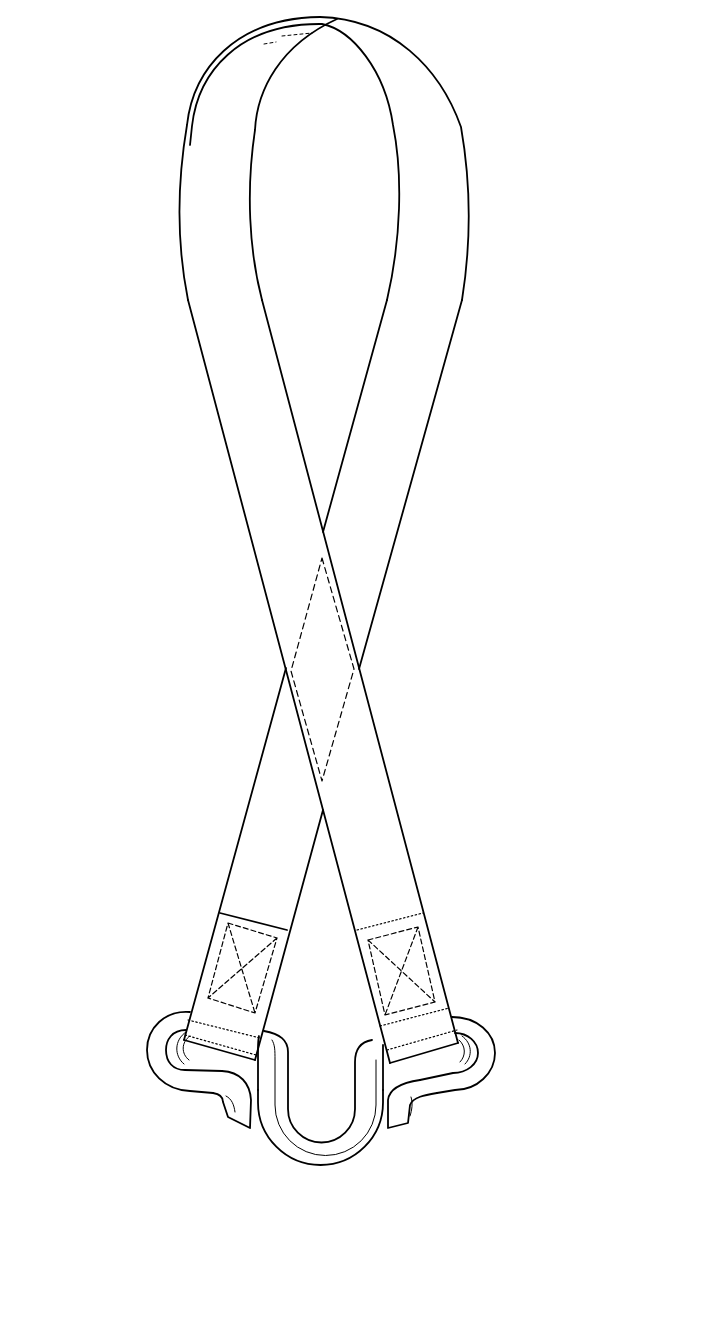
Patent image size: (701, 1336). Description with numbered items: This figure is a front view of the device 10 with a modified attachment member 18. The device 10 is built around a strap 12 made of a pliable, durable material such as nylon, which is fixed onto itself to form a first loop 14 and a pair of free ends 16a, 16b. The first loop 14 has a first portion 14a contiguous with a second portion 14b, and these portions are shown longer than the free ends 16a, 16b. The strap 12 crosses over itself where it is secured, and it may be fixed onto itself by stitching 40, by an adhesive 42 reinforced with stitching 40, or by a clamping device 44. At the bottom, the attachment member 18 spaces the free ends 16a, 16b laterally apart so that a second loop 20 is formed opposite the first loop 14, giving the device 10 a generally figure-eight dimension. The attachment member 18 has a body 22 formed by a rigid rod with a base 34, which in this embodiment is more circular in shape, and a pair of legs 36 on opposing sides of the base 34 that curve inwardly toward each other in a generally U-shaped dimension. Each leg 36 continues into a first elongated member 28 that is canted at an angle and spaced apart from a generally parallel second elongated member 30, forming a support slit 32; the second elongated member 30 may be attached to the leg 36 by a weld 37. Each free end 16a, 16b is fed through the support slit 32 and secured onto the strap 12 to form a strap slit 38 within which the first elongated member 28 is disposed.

The device 10 is at (502, 65).
The strap 12 is at (502, 408).
The first loop 14 is at (268, 198).
The first portion 14a is at (217, 348).
The second portion 14b is at (443, 230).
The free end 16a is at (238, 887).
The free end 16b is at (397, 866).
The attachment member 18 is at (278, 1176).
The second loop 20 is at (341, 981).
The body 22 is at (322, 1167).
The first elongated member 28 is at (180, 1010).
The second elongated member 30 is at (165, 1075).
The support slit 32 is at (190, 1055).
The base 34 is at (288, 1163).
The leg 36 is at (355, 1100).
The weld 37 is at (413, 1110).
The strap slit 38 is at (387, 1108).
The stitching 40 is at (428, 970).
The adhesive 42 is at (215, 948).
The clamping device 44 is at (343, 652).